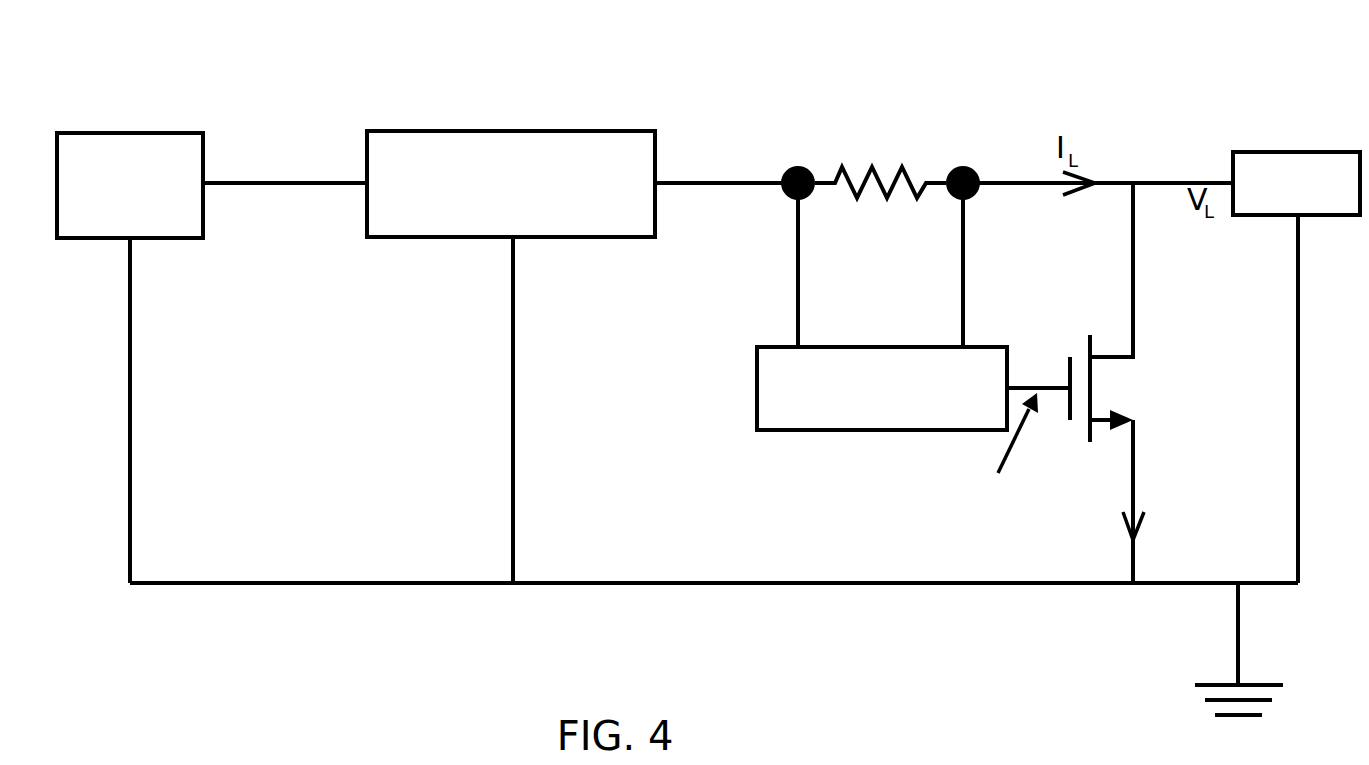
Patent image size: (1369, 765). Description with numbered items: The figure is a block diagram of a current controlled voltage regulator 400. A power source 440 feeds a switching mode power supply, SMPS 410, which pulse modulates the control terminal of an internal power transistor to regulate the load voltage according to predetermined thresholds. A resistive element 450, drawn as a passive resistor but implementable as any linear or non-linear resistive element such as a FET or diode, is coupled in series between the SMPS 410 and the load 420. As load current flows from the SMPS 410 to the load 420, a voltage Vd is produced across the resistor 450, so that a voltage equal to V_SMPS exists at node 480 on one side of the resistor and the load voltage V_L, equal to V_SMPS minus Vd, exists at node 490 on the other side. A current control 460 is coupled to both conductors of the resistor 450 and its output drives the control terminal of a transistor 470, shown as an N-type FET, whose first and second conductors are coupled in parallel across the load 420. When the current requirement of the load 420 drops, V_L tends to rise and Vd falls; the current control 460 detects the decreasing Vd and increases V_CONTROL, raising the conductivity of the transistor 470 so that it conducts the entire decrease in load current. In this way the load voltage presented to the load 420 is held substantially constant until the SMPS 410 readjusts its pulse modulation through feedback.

The voltage regulator 400 is at (296, 607).
The switching mode power supply 410 is at (573, 131).
The load 420 is at (1297, 152).
The power source 440 is at (130, 133).
The resistive element 450 is at (880, 187).
The current control 460 is at (913, 368).
The transistor 470 is at (1068, 383).
The node 480 is at (781, 148).
The node 490 is at (980, 146).